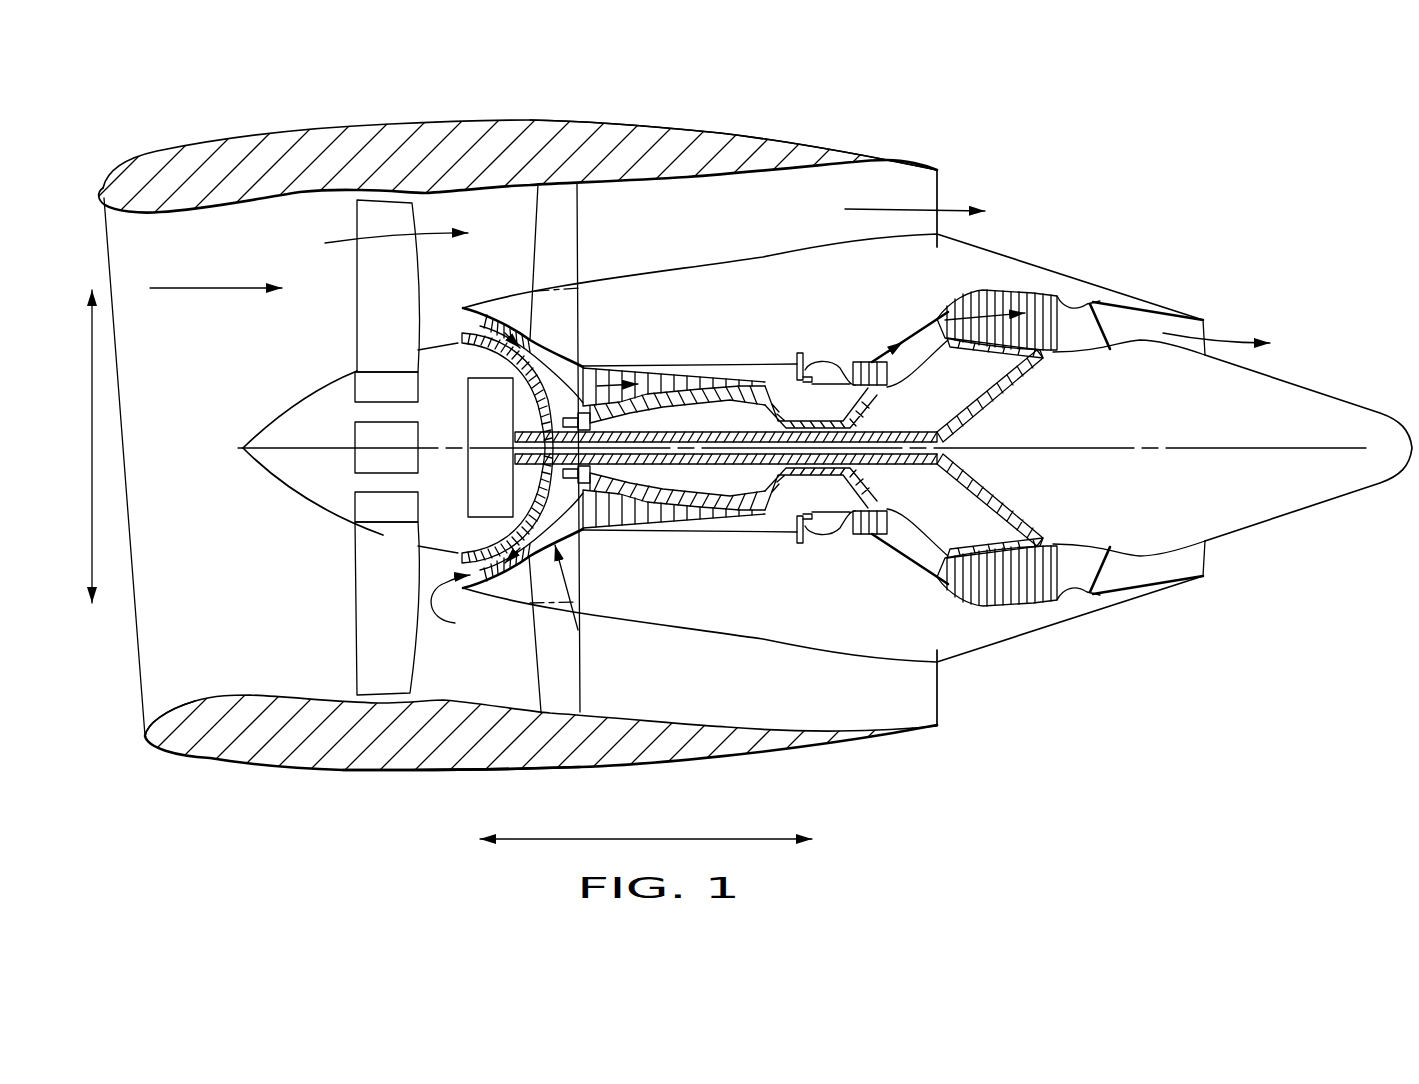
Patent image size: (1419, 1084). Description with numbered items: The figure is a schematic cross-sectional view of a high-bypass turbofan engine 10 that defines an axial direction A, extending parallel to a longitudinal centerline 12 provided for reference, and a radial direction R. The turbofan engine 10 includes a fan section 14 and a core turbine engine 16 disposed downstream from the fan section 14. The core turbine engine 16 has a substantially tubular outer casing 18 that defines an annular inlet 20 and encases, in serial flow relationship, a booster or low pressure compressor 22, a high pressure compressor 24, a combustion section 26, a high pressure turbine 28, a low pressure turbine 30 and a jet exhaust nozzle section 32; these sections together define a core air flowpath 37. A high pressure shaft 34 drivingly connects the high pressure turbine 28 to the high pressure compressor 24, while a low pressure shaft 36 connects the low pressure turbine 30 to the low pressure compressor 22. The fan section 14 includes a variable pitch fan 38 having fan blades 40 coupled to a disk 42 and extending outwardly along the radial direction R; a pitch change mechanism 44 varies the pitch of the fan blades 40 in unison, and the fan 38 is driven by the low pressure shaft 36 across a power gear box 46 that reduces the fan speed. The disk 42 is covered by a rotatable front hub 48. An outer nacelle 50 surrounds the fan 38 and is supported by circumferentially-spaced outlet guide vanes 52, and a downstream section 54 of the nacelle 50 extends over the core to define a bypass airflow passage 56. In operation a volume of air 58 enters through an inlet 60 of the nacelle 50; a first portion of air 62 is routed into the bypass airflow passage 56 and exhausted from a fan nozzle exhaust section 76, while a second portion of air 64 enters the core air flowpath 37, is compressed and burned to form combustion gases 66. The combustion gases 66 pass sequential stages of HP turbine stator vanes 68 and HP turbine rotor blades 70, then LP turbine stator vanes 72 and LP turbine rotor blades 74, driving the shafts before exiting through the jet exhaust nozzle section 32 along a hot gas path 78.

The turbofan engine 10 is at (1108, 158).
The longitudinal centerline 12 is at (1138, 446).
The fan section 14 is at (258, 237).
The core turbine engine 16 is at (770, 307).
The outer casing 18 is at (770, 640).
The annular inlet 20 is at (461, 607).
The low pressure compressor 22 is at (528, 512).
The high pressure compressor 24 is at (617, 527).
The combustion section 26 is at (818, 527).
The high pressure turbine 28 is at (897, 528).
The low pressure turbine 30 is at (1040, 605).
The jet exhaust nozzle section 32 is at (1108, 588).
The high pressure shaft 34 is at (872, 412).
The low pressure shaft 36 is at (958, 414).
The core air flowpath 37 is at (578, 630).
The variable pitch fan 38 is at (300, 503).
The fan blades 40 is at (352, 628).
The disk 42 is at (370, 388).
The pitch change mechanism 44 is at (353, 433).
The power gear box 46 is at (488, 393).
The front hub 48 is at (262, 465).
The outer nacelle 50 is at (404, 770).
The outlet guide vanes 52 is at (580, 231).
The downstream section 54 is at (830, 142).
The bypass airflow passage 56 is at (740, 228).
The volume of air 58 is at (208, 288).
The inlet 60 is at (138, 708).
The first portion of air 62 is at (370, 237).
The second portion of air 64 is at (447, 320).
The combustion gases 66 is at (868, 355).
The HP turbine stator vanes 68 is at (838, 528).
The HP turbine rotor blades 70 is at (863, 507).
The LP turbine stator vanes 72 is at (946, 583).
The LP turbine rotor blades 74 is at (960, 598).
The fan nozzle exhaust section 76 is at (922, 188).
The hot gas path 78 is at (920, 320).
The radial direction R is at (93, 448).
The axial direction A is at (643, 839).